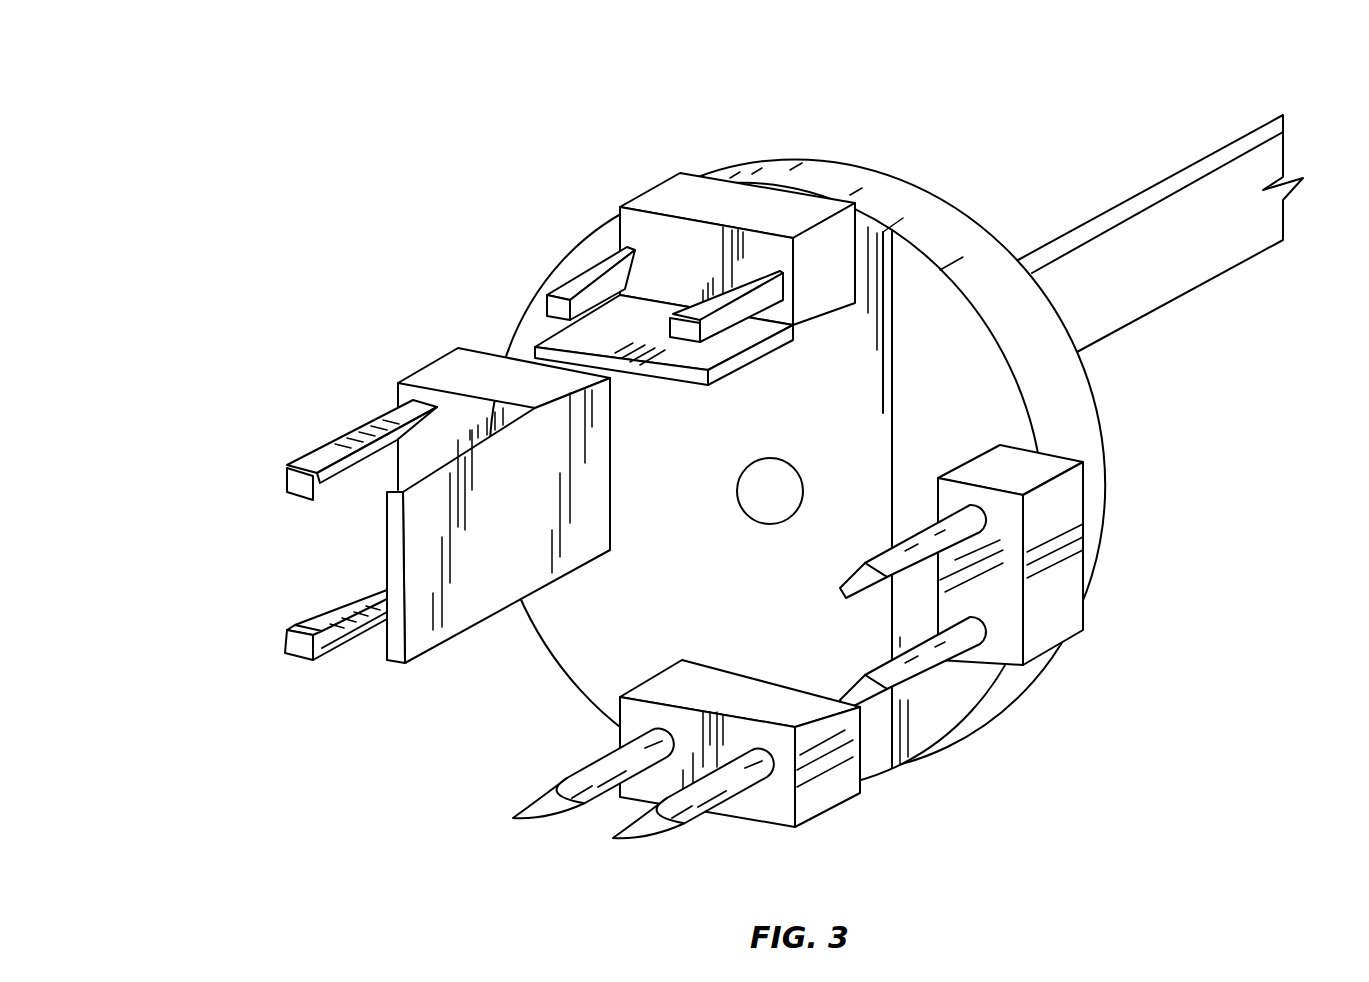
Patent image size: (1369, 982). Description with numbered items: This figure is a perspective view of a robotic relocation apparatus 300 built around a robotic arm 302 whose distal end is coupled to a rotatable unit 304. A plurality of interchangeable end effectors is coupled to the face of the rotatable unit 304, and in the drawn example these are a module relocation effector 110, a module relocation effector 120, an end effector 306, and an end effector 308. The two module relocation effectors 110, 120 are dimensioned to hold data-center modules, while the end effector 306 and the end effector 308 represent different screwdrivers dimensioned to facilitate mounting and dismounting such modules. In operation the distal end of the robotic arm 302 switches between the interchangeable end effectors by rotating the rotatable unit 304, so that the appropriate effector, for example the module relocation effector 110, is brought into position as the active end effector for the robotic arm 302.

The robotic relocation apparatus 300 is at (214, 128).
The module relocation effector 110 is at (652, 190).
The module relocation effector 120 is at (438, 363).
The robotic arm 302 is at (1155, 307).
The rotatable unit 304 is at (1000, 705).
The end effector 306 is at (1085, 510).
The end effector 308 is at (823, 808).